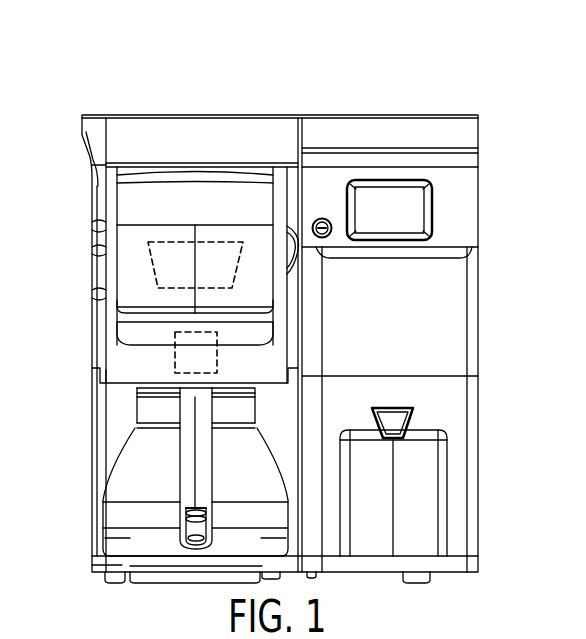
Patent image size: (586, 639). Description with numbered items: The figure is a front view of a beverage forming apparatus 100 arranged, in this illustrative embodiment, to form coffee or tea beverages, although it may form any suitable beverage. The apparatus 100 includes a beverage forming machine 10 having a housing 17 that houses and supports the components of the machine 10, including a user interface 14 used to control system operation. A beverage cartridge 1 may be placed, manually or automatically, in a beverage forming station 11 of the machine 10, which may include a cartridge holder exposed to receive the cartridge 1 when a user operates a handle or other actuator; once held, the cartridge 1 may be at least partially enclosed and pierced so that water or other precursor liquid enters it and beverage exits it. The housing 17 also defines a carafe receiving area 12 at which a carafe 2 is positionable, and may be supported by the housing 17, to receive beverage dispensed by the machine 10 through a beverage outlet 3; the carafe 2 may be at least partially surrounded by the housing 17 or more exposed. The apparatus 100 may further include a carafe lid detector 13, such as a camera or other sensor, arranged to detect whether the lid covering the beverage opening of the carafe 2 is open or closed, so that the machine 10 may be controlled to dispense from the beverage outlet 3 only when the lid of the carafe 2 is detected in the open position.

The beverage forming apparatus 100 is at (95, 77).
The beverage cartridge 1 is at (187, 260).
The carafe 2 is at (137, 463).
The beverage outlet 3 is at (180, 353).
The beverage forming machine 10 is at (469, 190).
The beverage forming station 11 is at (93, 258).
The carafe receiving area 12 is at (90, 557).
The carafe lid detector 13 is at (115, 375).
The user interface 14 is at (395, 225).
The housing 17 is at (472, 433).